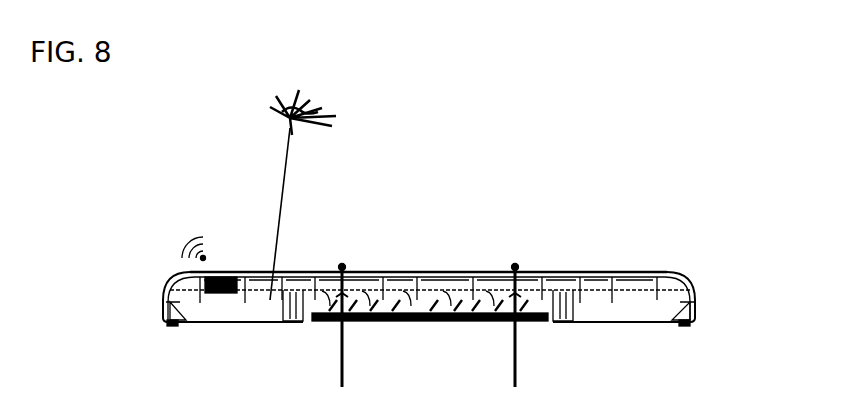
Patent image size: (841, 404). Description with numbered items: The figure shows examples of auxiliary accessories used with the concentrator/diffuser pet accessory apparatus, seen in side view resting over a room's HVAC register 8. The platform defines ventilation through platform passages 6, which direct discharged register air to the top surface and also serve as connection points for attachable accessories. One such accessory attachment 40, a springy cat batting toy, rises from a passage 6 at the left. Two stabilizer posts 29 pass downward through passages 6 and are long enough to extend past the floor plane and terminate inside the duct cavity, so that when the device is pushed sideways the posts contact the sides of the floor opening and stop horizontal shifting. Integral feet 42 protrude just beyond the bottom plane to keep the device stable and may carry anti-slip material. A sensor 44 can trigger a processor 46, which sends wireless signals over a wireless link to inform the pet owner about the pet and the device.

The through platform passage 6 is at (582, 272).
The HVAC register 8 is at (537, 325).
The stabilizer post 29 is at (342, 258).
The accessory attachment 40 is at (335, 96).
The foot 42 is at (690, 325).
The sensor 44 is at (163, 322).
The processor 46 is at (183, 273).